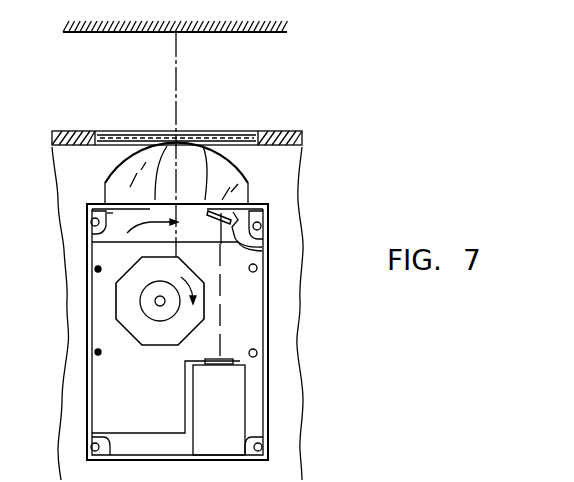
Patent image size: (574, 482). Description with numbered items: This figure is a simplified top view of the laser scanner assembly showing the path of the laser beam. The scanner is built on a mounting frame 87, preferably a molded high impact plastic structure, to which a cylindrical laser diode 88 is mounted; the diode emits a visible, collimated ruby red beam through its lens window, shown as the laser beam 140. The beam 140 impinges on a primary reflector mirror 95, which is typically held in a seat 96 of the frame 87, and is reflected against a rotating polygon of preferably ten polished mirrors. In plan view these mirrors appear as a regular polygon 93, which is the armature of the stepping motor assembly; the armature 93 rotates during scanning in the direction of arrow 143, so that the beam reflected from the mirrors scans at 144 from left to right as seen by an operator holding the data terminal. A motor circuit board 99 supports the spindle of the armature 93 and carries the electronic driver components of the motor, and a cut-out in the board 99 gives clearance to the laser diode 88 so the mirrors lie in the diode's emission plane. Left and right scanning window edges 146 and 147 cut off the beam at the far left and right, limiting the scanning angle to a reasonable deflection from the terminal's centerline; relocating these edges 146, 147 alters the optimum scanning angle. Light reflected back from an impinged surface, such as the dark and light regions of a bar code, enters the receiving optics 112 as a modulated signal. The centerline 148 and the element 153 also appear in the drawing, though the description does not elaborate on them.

The optical axis centerline 148 is at (176, 79).
The left scanning window edge 146 is at (161, 134).
The right scanning window edge 147 is at (208, 134).
The receiving optics 112 is at (238, 170).
The seat 96 is at (266, 212).
The primary reflector mirror 95 is at (264, 252).
The arrow 143 is at (197, 297).
The mounting frame 87 is at (268, 298).
The laser beam 140 is at (222, 343).
The laser diode 88 is at (235, 412).
The scan direction 144 is at (127, 233).
The regular polygon 93 is at (123, 302).
The motor circuit board 99 is at (103, 383).
The mounting surface 153 is at (513, 476).